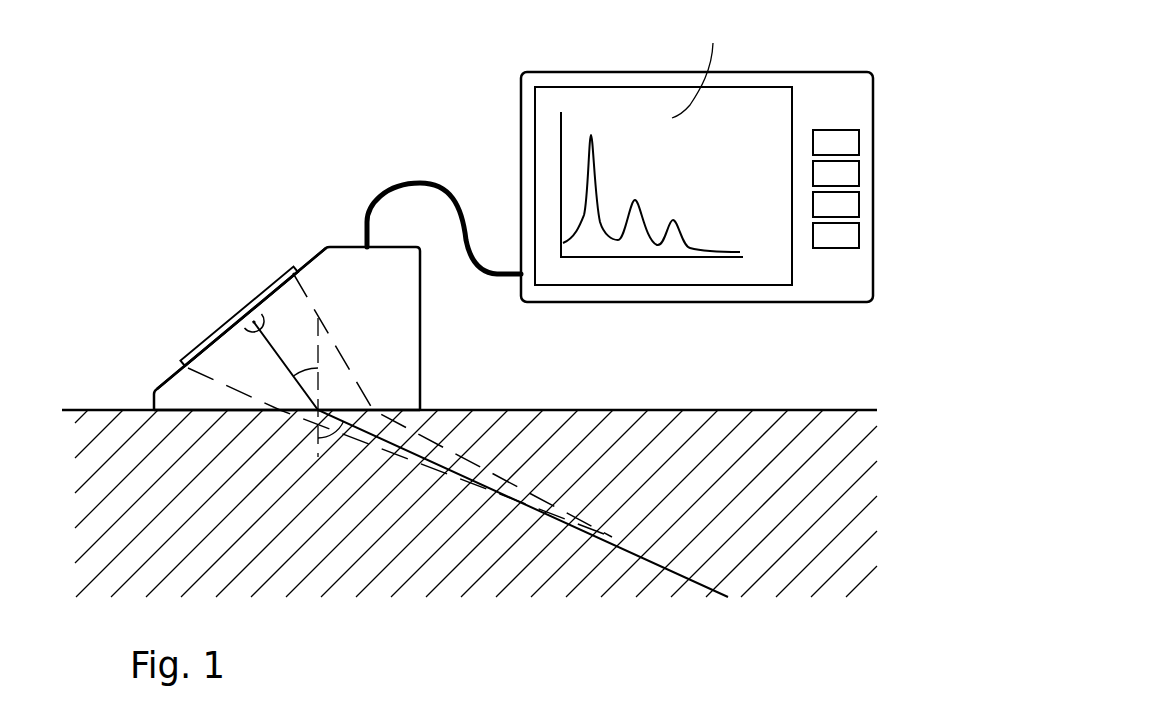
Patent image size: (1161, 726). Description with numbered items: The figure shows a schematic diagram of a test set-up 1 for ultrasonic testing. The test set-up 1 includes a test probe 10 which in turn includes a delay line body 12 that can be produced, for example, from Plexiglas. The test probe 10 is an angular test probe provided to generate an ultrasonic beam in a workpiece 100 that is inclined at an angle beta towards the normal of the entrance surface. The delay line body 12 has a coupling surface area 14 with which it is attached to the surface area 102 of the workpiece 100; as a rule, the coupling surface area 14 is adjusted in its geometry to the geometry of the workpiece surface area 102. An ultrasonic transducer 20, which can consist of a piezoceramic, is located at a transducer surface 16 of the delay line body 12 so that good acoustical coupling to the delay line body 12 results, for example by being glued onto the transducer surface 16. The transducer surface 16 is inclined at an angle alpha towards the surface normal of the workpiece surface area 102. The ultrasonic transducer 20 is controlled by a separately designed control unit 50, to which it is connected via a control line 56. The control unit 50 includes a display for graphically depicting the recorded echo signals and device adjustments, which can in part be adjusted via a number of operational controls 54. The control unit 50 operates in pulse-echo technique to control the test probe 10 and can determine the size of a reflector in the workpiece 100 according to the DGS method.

The test set-up 1 is at (214, 162).
The test probe 10 is at (152, 275).
The delay line body 12 is at (392, 325).
The coupling surface area 14 is at (391, 401).
The transducer surface 16 is at (309, 249).
The ultrasonic transducer 20 is at (208, 343).
The control unit 50 is at (812, 55).
The operational controls 54 is at (835, 142).
The control line 56 is at (420, 181).
The workpiece 100 is at (745, 432).
The surface area 102 is at (690, 400).